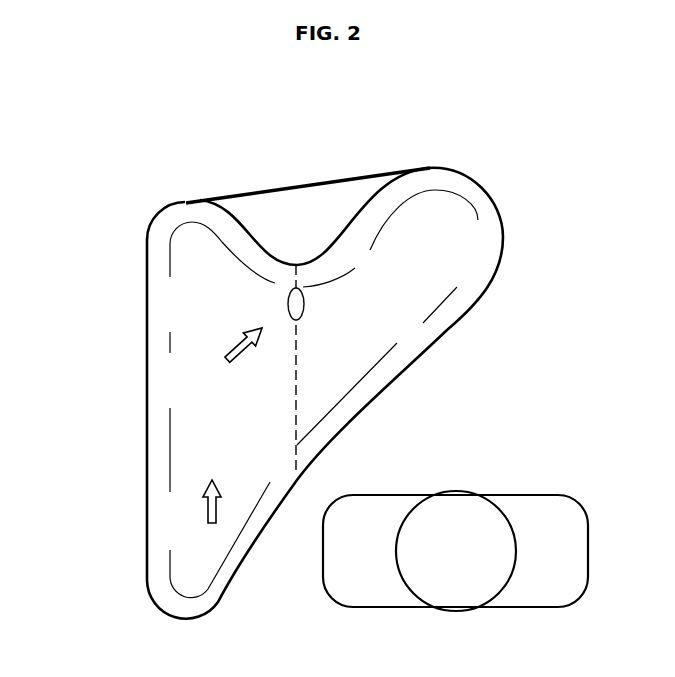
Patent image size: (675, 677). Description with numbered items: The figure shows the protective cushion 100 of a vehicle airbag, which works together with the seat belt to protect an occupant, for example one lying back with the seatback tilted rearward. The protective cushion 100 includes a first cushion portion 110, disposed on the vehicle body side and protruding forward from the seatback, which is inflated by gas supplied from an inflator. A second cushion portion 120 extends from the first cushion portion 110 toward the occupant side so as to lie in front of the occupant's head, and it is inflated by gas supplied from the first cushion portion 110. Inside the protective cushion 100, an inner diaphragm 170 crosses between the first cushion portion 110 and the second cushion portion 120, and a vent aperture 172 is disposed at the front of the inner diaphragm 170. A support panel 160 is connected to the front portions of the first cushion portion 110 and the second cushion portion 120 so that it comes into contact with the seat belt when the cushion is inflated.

The protective cushion 100 is at (156, 188).
The first cushion portion 110 is at (178, 392).
The second cushion portion 120 is at (462, 257).
The support panel 160 is at (304, 186).
The inner diaphragm 170 is at (297, 395).
The vent aperture 172 is at (303, 308).